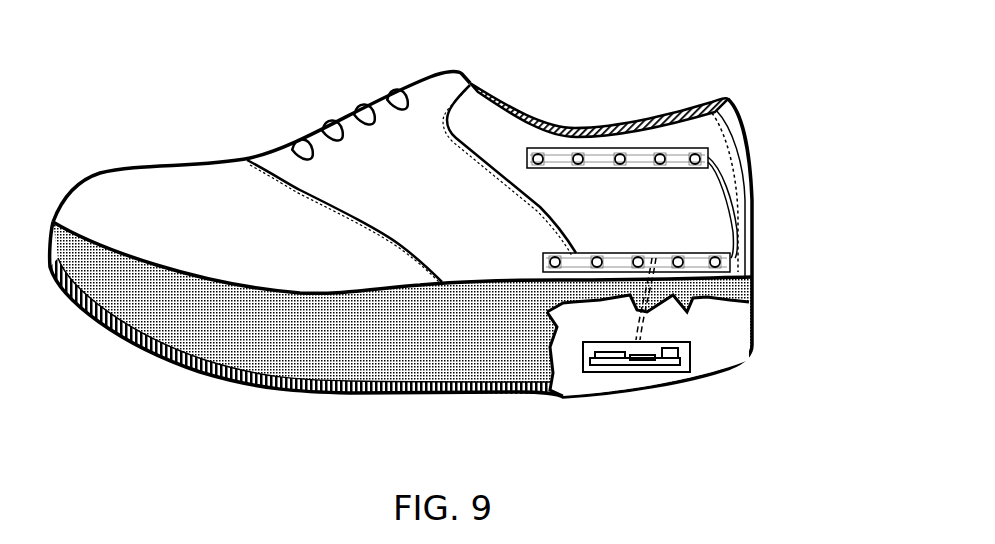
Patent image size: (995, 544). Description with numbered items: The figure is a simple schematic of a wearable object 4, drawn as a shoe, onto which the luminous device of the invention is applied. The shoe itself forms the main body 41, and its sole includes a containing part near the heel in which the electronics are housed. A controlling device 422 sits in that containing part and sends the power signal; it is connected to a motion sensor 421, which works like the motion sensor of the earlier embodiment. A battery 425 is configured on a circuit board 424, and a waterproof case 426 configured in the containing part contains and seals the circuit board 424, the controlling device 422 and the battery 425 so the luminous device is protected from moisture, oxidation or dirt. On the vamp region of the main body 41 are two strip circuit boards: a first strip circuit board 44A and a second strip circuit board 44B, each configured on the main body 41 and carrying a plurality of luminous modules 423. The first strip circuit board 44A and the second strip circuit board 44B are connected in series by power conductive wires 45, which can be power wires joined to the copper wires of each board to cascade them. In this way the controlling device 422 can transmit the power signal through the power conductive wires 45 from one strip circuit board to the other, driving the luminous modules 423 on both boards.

The wearable object 4 is at (256, 77).
The main body 41 is at (722, 98).
The first strip circuit board 44A is at (748, 277).
The second strip circuit board 44B is at (707, 150).
The power conductive wires 45 is at (748, 199).
The motion sensor 421 is at (695, 365).
The controlling device 422 is at (653, 365).
The luminous modules 423 is at (723, 258).
The circuit board 424 is at (638, 365).
The battery 425 is at (591, 366).
The waterproof case 426 is at (697, 347).